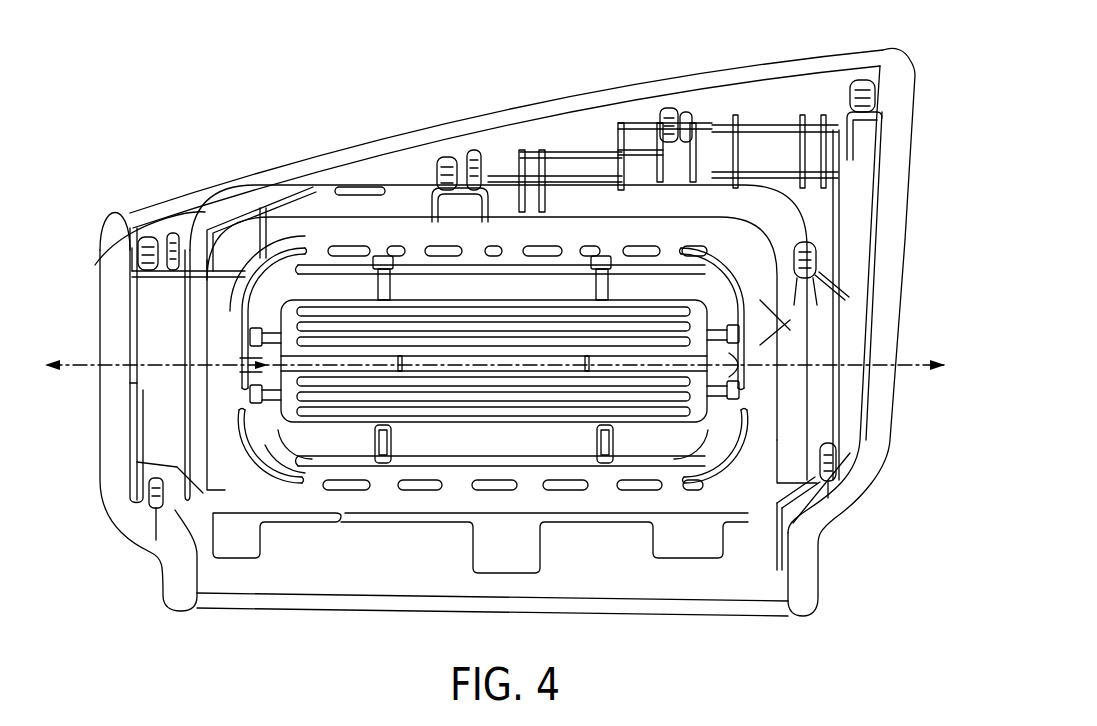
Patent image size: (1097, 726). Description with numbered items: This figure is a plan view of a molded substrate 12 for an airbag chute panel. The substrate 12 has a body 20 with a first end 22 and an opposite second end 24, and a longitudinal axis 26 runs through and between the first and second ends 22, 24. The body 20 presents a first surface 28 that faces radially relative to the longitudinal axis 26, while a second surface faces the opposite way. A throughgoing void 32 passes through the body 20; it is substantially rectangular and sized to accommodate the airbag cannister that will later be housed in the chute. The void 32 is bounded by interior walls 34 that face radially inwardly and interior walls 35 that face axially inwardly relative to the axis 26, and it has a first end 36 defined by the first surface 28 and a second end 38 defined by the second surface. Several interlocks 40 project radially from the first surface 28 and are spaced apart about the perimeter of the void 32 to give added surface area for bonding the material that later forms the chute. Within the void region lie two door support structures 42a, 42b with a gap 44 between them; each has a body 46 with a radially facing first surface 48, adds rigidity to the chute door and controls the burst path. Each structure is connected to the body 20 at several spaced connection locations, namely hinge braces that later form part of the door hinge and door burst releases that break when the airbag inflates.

The substrate 12 is at (183, 93).
The body 20 is at (250, 572).
The first end 22 is at (128, 188).
The second end 24 is at (920, 137).
The longitudinal axis 26 is at (908, 365).
The first surface 28 is at (398, 170).
The void 32 is at (331, 283).
The interior walls 34 is at (487, 273).
The interior walls 35 is at (262, 340).
The first end of the void 36 is at (563, 262).
The second end of the void 38 is at (637, 270).
The interlock 40 is at (263, 258).
The door support structure 42a is at (250, 323).
The door support structure 42b is at (690, 398).
The gap 44 is at (240, 367).
The body of the structure 46 is at (745, 355).
The first surface 48 is at (797, 296).